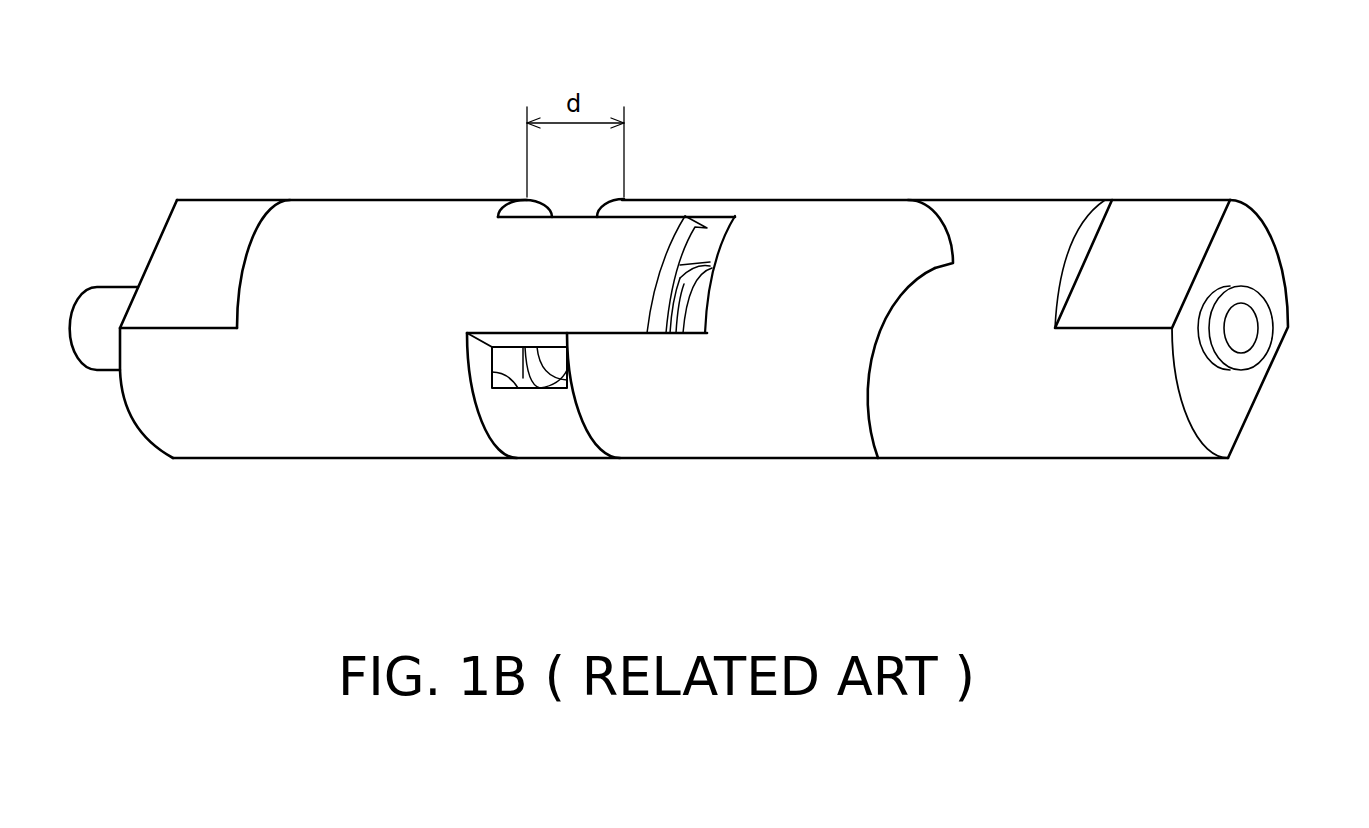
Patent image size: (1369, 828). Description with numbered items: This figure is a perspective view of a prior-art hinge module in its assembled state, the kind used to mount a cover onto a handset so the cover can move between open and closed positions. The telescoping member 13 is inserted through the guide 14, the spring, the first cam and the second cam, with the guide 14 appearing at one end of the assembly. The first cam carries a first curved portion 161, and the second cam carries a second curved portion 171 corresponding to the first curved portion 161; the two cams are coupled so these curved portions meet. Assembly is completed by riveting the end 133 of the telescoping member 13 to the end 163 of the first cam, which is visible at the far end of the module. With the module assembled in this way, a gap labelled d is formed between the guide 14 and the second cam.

The button 13 is at (102, 310).
The front housing 14 is at (218, 220).
The sleeve 171 is at (880, 235).
The rear housing 161 is at (905, 410).
The end cap 163 is at (1248, 235).
The connector port 133 is at (1240, 332).